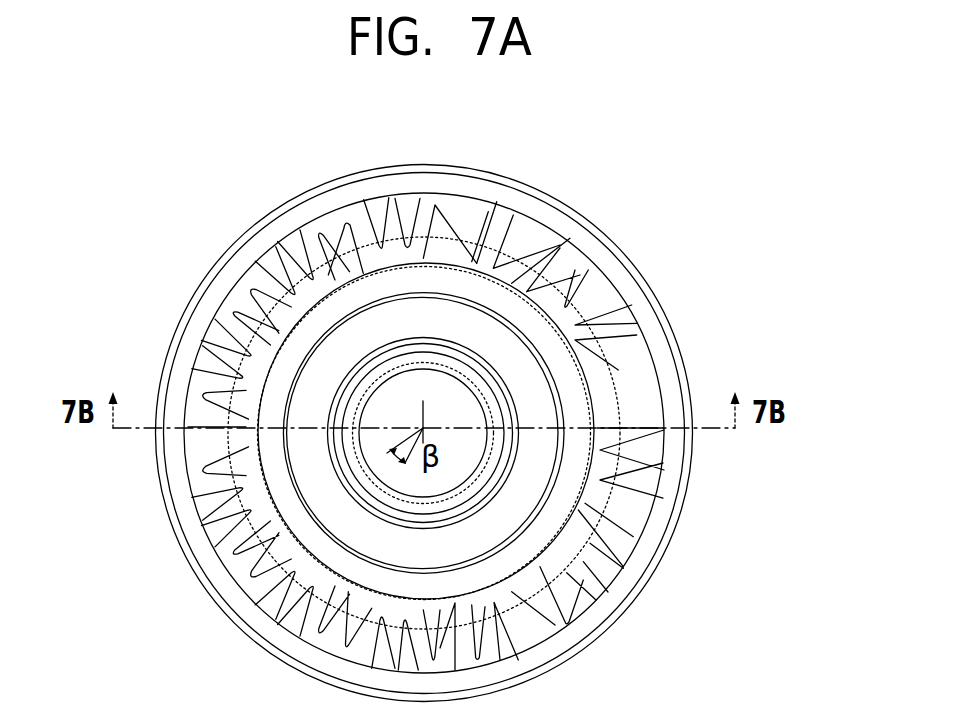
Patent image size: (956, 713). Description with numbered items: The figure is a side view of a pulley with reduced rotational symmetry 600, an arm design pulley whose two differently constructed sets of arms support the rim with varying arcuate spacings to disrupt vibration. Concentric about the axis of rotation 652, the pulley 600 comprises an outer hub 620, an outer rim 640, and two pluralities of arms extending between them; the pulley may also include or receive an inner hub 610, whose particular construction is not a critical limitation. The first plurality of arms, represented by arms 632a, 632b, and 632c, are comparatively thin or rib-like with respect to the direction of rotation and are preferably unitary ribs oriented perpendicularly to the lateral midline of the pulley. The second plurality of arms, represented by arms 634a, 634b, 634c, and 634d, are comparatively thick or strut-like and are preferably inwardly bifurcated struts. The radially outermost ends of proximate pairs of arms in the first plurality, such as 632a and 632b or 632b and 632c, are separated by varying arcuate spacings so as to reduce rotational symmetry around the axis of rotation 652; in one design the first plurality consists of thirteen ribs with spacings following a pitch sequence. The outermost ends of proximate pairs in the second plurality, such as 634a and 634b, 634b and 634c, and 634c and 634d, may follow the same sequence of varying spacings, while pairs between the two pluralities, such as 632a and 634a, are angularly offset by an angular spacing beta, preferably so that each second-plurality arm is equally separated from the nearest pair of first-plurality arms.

The pulley with reduced rotational symmetry 600 is at (111, 195).
The inner hub 610 is at (495, 408).
The outer hub 620 is at (537, 322).
The outer rim 640 is at (635, 318).
The axis of rotation 652 is at (445, 417).
The arm of first plurality of arms 632a is at (500, 218).
The arm of first plurality of arms 632b is at (390, 208).
The arm of first plurality of arms 632c is at (287, 240).
The arm of second plurality of arms 634a is at (440, 202).
The arm of second plurality of arms 634b is at (337, 215).
The arm of second plurality of arms 634c is at (245, 282).
The arm of second plurality of arms 634d is at (203, 366).